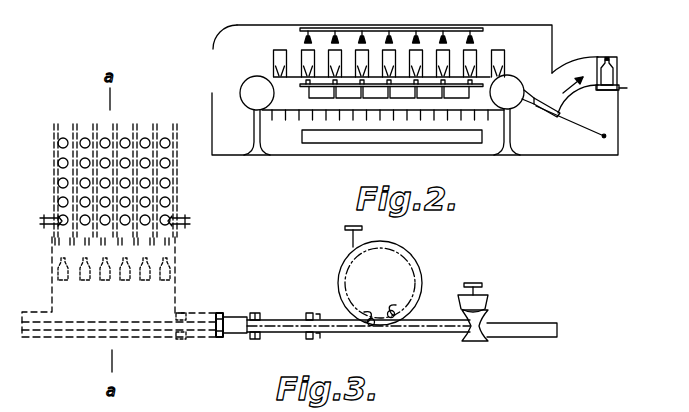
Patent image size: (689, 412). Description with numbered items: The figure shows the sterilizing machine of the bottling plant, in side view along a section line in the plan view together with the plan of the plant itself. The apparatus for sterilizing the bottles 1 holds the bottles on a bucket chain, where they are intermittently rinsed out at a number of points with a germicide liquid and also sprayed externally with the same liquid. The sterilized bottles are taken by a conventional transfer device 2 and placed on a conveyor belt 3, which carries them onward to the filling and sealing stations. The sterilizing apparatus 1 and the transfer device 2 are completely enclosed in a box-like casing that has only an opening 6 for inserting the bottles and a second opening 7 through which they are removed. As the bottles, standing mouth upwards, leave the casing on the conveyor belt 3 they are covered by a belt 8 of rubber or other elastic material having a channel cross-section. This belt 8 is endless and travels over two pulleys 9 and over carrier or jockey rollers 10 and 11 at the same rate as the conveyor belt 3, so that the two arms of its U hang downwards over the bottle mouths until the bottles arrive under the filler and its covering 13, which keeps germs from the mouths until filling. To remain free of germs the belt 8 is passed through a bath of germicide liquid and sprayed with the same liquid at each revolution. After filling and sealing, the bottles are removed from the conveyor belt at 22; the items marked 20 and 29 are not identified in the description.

In FIG. 2, the apparatus for sterilizing the bottles 1 is at (392, 129).
In FIG. 2, the transfer device 2 is at (564, 107).
In FIG. 2, the conveyor belt 3 is at (628, 89).
In FIG. 2, the opening for inserting the bottles 6 is at (245, 89).
In FIG. 2, the opening through which the bottles are removed 7 is at (565, 67).
In FIG. 2, the belt 8 is at (608, 56).
In FIG. 3, the belt 8 is at (291, 333).
In FIG. 3, the pulleys 9 is at (188, 334).
In FIG. 3, the carrier or jockey roller 10 is at (258, 322).
In FIG. 3, the carrier or jockey roller 11 is at (223, 316).
In FIG. 3, the covering 13 is at (413, 333).
In FIG. 3, the valve 20 is at (481, 317).
In FIG. 3, the removal point 22 is at (538, 323).
In FIG. 3, the ring 29 is at (398, 262).